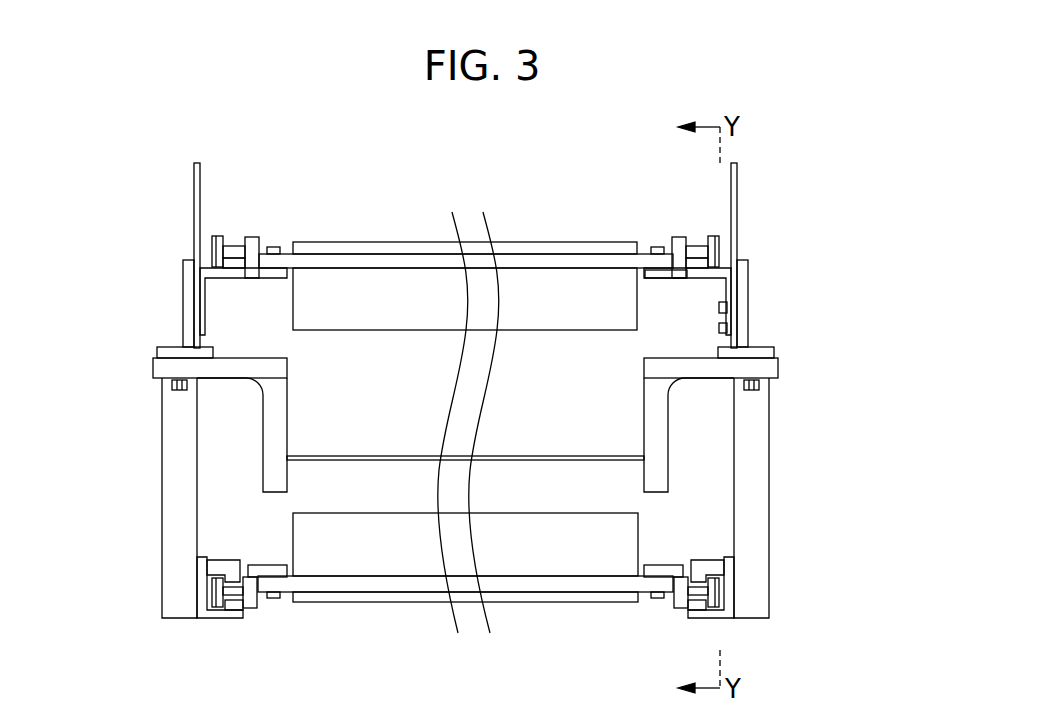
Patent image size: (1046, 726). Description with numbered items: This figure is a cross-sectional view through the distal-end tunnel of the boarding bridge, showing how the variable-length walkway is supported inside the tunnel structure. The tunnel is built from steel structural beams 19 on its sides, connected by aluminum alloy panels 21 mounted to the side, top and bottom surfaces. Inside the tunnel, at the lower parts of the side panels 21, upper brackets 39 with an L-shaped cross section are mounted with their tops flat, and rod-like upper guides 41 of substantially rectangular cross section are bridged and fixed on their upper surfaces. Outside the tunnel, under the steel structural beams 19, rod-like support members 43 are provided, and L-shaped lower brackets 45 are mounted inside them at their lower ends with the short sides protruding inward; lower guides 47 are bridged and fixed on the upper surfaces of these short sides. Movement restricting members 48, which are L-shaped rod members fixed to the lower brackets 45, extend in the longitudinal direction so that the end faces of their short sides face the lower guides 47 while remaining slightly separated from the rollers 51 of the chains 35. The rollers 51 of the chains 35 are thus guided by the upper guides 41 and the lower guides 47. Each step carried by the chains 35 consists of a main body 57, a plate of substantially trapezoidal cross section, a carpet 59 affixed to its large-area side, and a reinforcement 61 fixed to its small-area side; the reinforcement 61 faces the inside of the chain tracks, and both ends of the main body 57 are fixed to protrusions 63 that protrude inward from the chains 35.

The steel structural beam 19 is at (263, 428).
The panel 21 is at (194, 199).
The chain 35 is at (262, 218).
The upper bracket 39 is at (208, 268).
The upper guide 41 is at (233, 270).
The support member 43 is at (162, 530).
The lower bracket 45 is at (210, 620).
The lower guide 47 is at (235, 610).
The movement restricting member 48 is at (231, 568).
The roller 51 is at (236, 246).
The main body 57 is at (354, 255).
The carpet 59 is at (408, 246).
The reinforcement 61 is at (383, 326).
The protrusion 63 is at (663, 278).